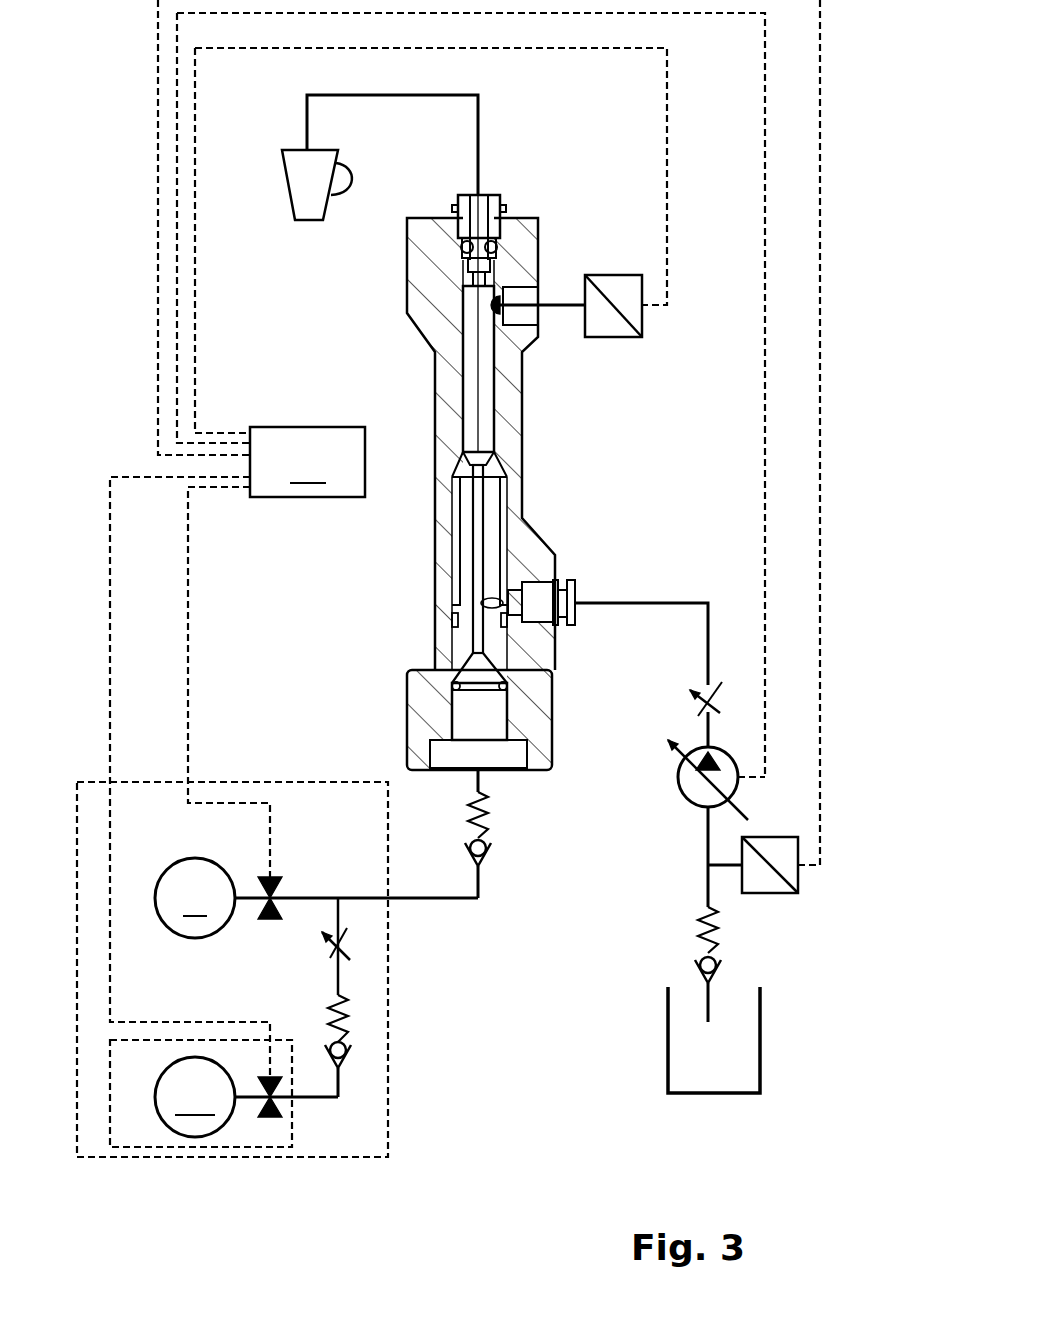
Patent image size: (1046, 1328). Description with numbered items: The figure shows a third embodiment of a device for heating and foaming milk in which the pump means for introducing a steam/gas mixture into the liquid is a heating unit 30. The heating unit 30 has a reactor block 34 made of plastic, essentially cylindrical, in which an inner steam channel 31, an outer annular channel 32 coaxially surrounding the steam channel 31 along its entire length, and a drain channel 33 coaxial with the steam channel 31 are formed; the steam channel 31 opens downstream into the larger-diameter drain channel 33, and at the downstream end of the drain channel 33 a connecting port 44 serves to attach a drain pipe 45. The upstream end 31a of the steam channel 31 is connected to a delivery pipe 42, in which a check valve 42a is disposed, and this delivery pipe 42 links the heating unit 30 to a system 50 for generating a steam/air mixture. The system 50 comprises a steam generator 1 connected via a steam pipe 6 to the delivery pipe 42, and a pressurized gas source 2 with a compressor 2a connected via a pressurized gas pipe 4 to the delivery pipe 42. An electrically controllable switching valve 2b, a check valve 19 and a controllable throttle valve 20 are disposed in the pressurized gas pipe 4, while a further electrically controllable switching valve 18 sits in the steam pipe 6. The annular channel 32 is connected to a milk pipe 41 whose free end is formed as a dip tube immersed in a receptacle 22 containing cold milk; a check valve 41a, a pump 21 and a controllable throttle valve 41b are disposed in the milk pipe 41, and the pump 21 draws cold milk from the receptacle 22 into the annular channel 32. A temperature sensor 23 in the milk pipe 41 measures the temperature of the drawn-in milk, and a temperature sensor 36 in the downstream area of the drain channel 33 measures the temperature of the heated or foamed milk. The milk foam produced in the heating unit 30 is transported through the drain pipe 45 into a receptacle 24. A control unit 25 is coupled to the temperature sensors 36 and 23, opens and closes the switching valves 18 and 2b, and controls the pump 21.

The steam generator 1 is at (195, 898).
The pressurized gas source 2 is at (152, 1132).
The compressor 2a is at (195, 1097).
The switching valve 2b is at (272, 1119).
The pressurized gas pipe 4 is at (320, 1099).
The steam pipe 6 is at (300, 886).
The switching valve 18 is at (272, 921).
The check valve 19 is at (355, 1030).
The controllable throttle valve 20 is at (355, 942).
The pump 21 is at (692, 787).
The receptacle 22 is at (693, 1033).
The temperature sensor 23 is at (781, 895).
The receptacle 24 is at (306, 193).
The control unit 25 is at (465, 538).
The heating unit 30 is at (498, 461).
The inner steam channel 31 is at (476, 548).
The upstream end 31a is at (455, 750).
The outer annular channel 32 is at (502, 537).
The drain channel 33 is at (484, 380).
The reactor block 34 is at (407, 332).
The temperature sensor 36 is at (505, 302).
The milk pipe 41 is at (625, 600).
The check valve 41a is at (700, 940).
The controllable throttle valve 41b is at (690, 697).
The delivery pipe 42 is at (423, 896).
The check valve 42a is at (490, 833).
The connecting port 44 is at (460, 210).
The drain pipe 45 is at (480, 140).
The system for generating a steam/air mixture 50 is at (392, 1100).